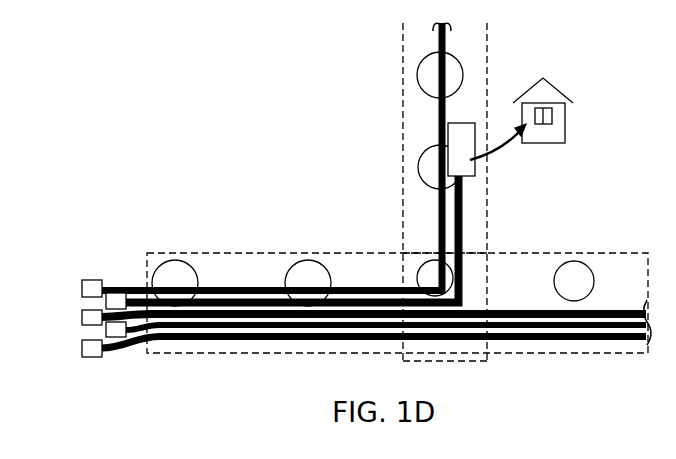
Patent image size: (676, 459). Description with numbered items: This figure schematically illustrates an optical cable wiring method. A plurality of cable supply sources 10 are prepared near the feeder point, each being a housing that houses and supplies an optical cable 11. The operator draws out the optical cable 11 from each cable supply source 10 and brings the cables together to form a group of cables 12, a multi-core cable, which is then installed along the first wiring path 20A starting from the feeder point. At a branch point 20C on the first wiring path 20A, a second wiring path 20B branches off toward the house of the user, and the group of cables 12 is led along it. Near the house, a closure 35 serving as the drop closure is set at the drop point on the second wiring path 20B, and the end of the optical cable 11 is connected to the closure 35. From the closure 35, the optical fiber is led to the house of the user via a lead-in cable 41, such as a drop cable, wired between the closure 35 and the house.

The cable supply source 10 is at (92, 280).
The optical cable 11 is at (230, 287).
The group of cables 12 is at (262, 278).
The first wiring path 20A is at (580, 253).
The second wiring path 20B is at (400, 80).
The branch point 20C is at (419, 248).
The closure 35 is at (462, 123).
The lead-in cable 41 is at (503, 148).